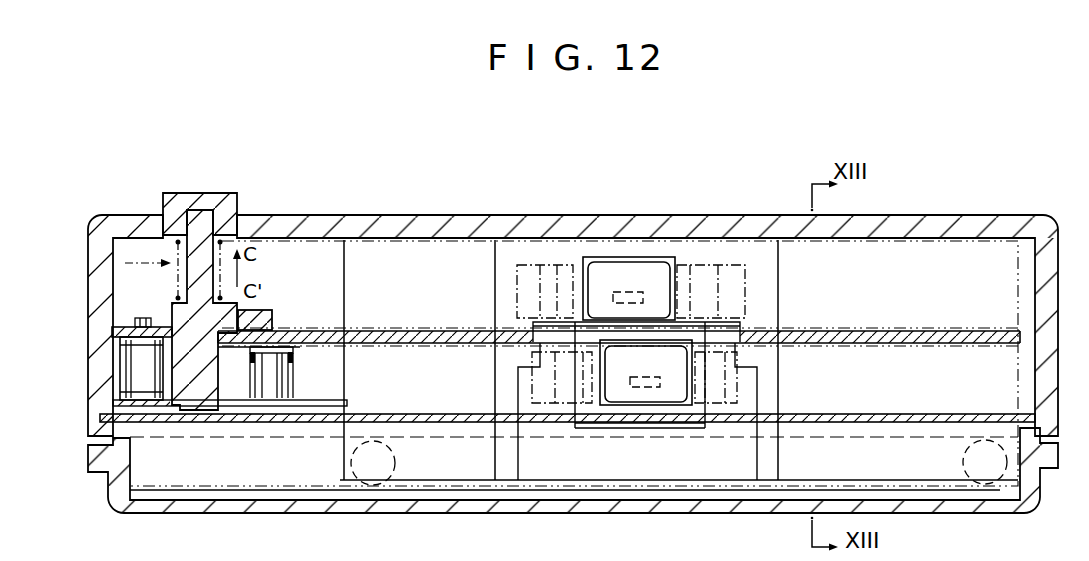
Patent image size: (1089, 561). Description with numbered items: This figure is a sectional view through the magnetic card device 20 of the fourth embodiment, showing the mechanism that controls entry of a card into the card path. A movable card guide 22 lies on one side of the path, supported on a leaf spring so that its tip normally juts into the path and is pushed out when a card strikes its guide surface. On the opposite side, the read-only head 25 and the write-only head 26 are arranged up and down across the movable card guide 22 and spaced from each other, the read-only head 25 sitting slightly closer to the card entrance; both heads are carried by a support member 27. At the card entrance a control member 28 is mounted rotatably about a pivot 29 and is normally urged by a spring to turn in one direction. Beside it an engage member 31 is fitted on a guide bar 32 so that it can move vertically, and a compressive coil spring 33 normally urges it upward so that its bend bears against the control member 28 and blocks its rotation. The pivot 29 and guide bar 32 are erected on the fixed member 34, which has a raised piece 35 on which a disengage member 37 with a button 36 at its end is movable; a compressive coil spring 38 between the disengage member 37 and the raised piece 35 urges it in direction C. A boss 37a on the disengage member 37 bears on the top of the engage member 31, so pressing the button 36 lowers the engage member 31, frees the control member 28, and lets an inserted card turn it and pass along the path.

The device 20 is at (462, 213).
The movable card guide 22 is at (410, 338).
The read-only head 25 is at (650, 270).
The write-only head 26 is at (670, 394).
The support member 27 is at (897, 389).
The control member 28 is at (123, 343).
The pivot 29 is at (152, 392).
The engage member 31 is at (291, 351).
The guide bar 32 is at (278, 393).
The compressive coil spring 33 is at (293, 402).
The fixed member 34 is at (123, 414).
The raised piece 35 is at (230, 385).
The button 36 is at (177, 197).
The disengage member 37 is at (190, 280).
The boss 37a is at (258, 312).
The compressive coil spring 38 is at (123, 264).